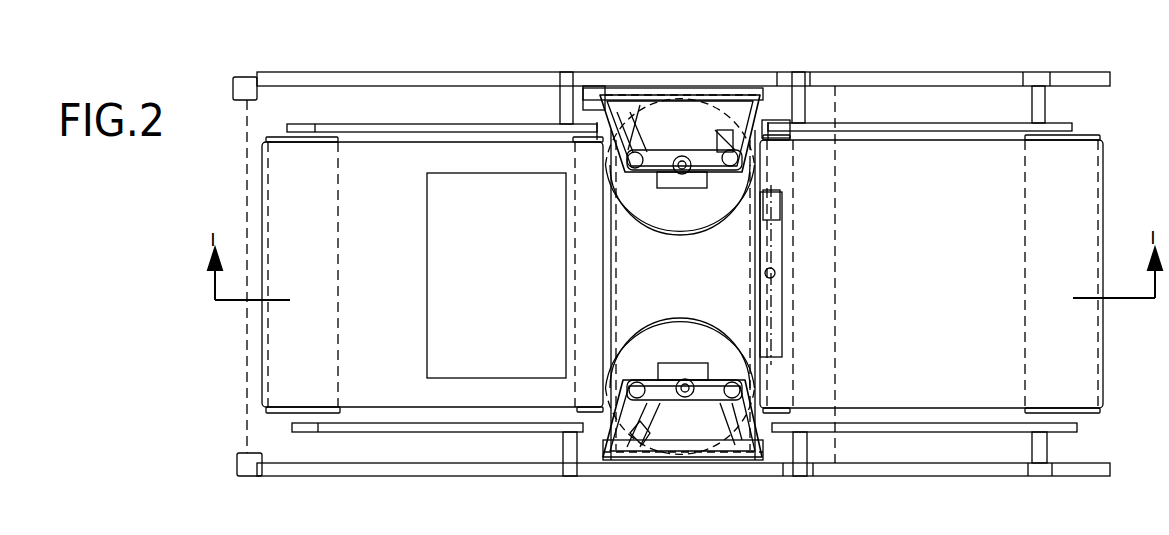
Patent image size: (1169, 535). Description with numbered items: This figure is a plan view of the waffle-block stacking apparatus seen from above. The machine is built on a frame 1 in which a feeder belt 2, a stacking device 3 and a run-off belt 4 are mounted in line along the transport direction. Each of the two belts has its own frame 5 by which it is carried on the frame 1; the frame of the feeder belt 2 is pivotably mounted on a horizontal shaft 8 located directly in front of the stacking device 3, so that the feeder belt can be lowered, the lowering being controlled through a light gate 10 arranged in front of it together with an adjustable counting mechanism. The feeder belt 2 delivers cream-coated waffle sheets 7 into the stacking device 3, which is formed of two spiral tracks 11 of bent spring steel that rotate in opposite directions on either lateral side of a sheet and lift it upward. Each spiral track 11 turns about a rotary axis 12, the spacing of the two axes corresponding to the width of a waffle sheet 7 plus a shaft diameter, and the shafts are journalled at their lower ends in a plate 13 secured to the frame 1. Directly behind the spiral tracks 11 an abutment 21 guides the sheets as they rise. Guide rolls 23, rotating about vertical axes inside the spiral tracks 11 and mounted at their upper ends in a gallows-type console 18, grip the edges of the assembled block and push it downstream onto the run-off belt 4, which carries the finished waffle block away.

The frame 1 is at (376, 78).
The feeder belt 2 is at (357, 190).
The stacking device 3 is at (673, 253).
The run-off belt 4 is at (877, 212).
The frame 5 is at (485, 127).
The waffle sheet 7 is at (470, 233).
The horizontal shaft 8 is at (567, 112).
The light gate 10 is at (252, 460).
The spiral track 11 is at (717, 103).
The rotary axis 12 is at (690, 382).
The plate 13 is at (637, 95).
The gallows-type console 18 is at (764, 100).
The abutment 21 is at (770, 268).
The guide roll 23 is at (640, 150).